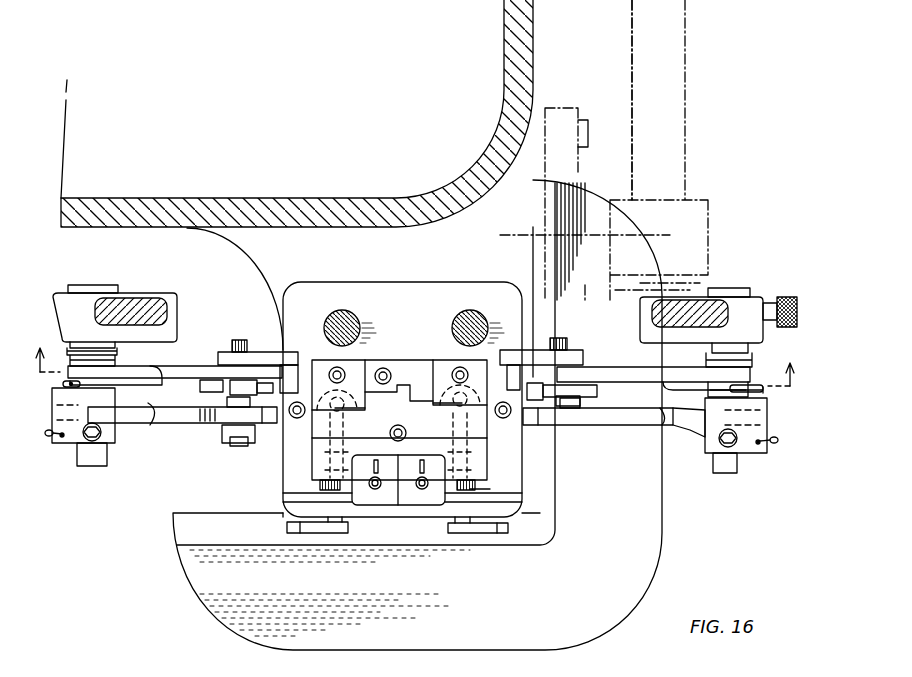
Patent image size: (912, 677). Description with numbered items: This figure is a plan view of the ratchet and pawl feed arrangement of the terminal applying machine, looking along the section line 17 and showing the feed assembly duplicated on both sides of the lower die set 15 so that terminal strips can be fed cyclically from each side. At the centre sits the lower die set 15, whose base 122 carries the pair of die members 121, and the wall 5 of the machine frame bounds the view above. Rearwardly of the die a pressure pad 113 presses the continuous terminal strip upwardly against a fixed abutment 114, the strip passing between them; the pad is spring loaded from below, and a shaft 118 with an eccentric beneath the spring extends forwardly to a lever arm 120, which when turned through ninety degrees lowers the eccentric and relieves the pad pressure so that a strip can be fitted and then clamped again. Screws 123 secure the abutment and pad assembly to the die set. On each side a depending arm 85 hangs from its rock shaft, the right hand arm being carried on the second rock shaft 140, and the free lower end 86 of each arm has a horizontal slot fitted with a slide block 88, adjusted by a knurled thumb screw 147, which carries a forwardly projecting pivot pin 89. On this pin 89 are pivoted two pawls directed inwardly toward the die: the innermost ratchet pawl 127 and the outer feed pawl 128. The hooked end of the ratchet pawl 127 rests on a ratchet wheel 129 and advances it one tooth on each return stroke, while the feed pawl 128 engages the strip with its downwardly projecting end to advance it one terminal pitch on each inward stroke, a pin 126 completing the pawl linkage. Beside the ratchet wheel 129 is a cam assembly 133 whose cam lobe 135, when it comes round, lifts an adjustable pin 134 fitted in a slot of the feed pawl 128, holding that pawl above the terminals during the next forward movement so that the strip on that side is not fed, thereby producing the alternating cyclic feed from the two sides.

The wall 5 is at (518, 14).
The lower die set 15 is at (488, 493).
The section line 17 is at (421, 355).
The depending arm 85 is at (141, 308).
The free lower end 86 is at (172, 300).
The slide block 88 is at (62, 436).
The pivot pin 89 is at (97, 452).
The pressure pad 113 is at (447, 412).
The abutment 114 is at (357, 368).
The shaft 118 is at (304, 470).
The lever arm 120 is at (323, 534).
The die members 121 is at (410, 490).
The base 122 is at (305, 490).
The screw 123 is at (335, 366).
The pin 126 is at (211, 435).
The ratchet pawl 127 is at (192, 366).
The feed pawl 128 is at (157, 424).
The ratchet wheel 129 is at (257, 378).
The cam assembly 133 is at (570, 405).
The pin 134 is at (218, 395).
The cam lobe 135 is at (265, 433).
The second rock shaft 140 is at (670, 143).
The knurled screw 147 is at (238, 340).